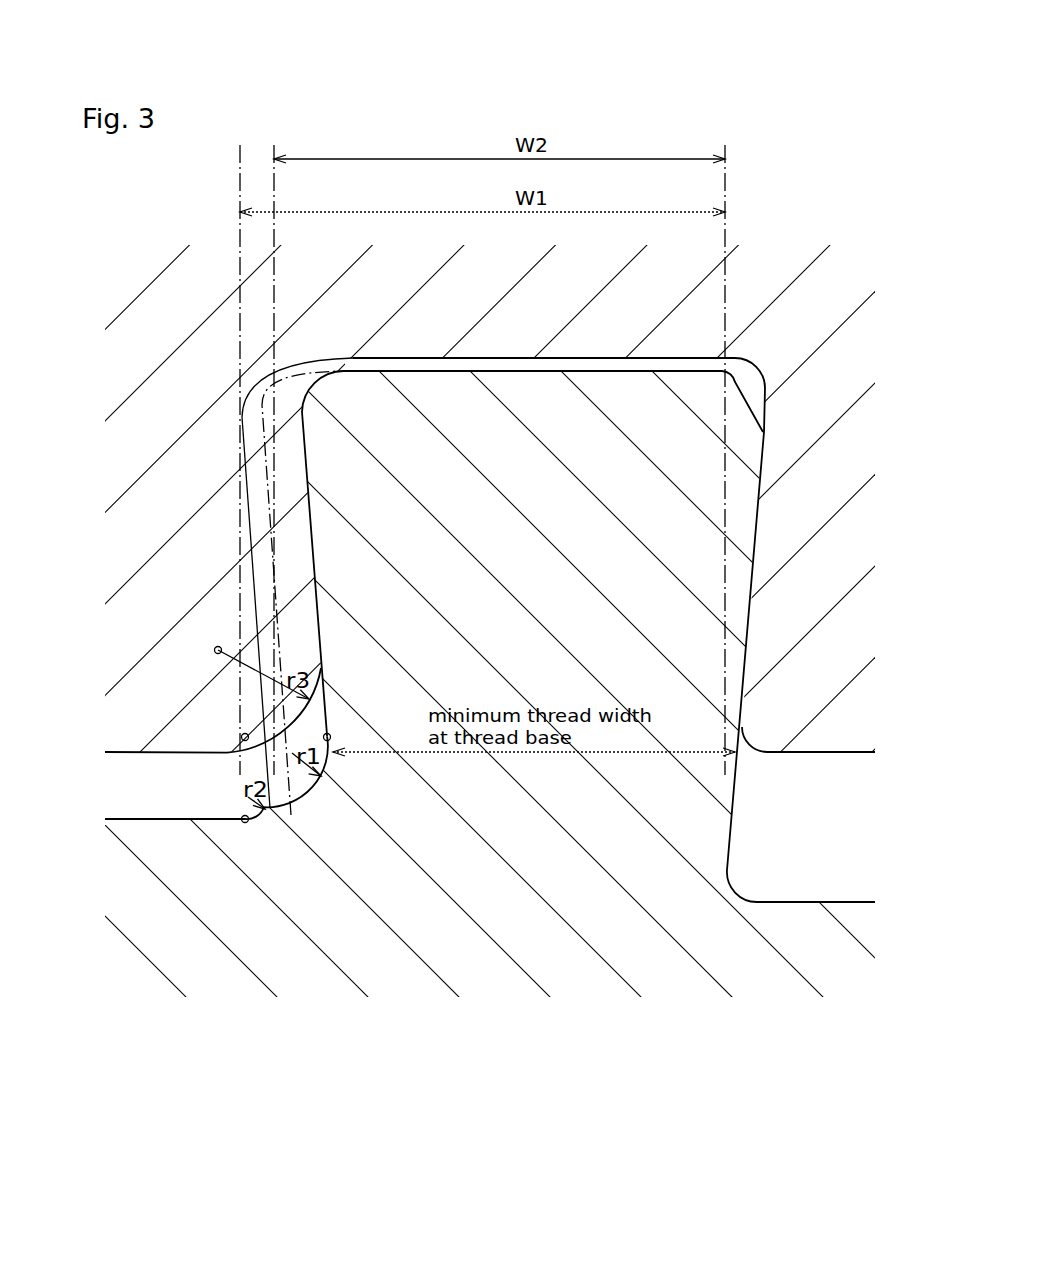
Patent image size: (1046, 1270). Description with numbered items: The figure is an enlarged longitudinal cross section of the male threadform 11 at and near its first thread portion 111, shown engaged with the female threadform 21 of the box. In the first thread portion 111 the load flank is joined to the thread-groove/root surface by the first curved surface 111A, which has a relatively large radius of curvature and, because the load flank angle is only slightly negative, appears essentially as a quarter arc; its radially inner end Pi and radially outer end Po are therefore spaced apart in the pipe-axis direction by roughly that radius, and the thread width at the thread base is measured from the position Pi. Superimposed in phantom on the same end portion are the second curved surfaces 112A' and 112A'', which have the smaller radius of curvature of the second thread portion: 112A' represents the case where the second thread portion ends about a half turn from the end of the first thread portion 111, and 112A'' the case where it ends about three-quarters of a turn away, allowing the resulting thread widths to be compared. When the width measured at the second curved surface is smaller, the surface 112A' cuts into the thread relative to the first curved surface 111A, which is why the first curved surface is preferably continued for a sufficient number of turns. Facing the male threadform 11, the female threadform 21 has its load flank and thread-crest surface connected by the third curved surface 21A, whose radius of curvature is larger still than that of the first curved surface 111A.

The male threadform 11 is at (758, 637).
The first thread portion 111 is at (755, 462).
The first curved surface 111A is at (293, 805).
The second curved surface 112A' is at (311, 735).
The second curved surface 112A'' is at (225, 758).
The female threadform 21 is at (148, 757).
The third curved surface 21A is at (323, 679).
The radially outer end Po is at (334, 745).
The radially inner end Pi is at (244, 834).